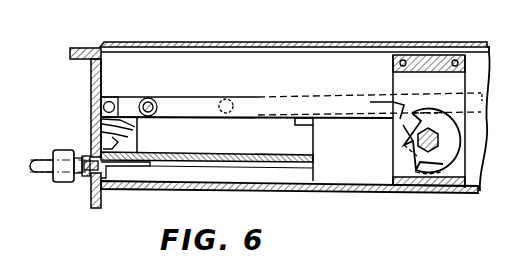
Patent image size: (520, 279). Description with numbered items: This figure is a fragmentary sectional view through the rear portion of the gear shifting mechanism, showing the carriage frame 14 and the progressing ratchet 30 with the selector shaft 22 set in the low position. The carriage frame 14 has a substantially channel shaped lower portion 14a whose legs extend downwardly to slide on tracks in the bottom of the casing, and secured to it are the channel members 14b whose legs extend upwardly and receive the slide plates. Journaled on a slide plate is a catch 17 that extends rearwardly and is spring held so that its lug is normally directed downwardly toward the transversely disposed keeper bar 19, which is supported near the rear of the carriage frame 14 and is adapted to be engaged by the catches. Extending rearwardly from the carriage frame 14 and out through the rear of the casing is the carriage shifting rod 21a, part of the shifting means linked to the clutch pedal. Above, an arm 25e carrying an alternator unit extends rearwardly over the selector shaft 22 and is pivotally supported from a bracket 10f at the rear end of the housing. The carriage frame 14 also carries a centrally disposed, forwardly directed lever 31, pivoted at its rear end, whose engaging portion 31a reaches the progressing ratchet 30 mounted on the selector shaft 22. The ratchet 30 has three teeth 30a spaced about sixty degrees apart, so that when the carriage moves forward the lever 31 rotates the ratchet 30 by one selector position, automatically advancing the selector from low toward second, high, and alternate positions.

The keeper bar 19 is at (311, 30).
The bracket 10f is at (102, 128).
The lever 31 is at (299, 96).
The engaging portion 31a is at (400, 120).
The arm 25e is at (132, 98).
The catch 17 is at (140, 134).
The channel member 14b is at (205, 150).
The carriage frame 14 is at (205, 147).
The lower portion 14a is at (221, 160).
The carriage shifting rod 21a is at (46, 163).
The progressing ratchet 30 is at (448, 166).
The teeth 30a is at (412, 113).
The selector shaft 22 is at (398, 186).